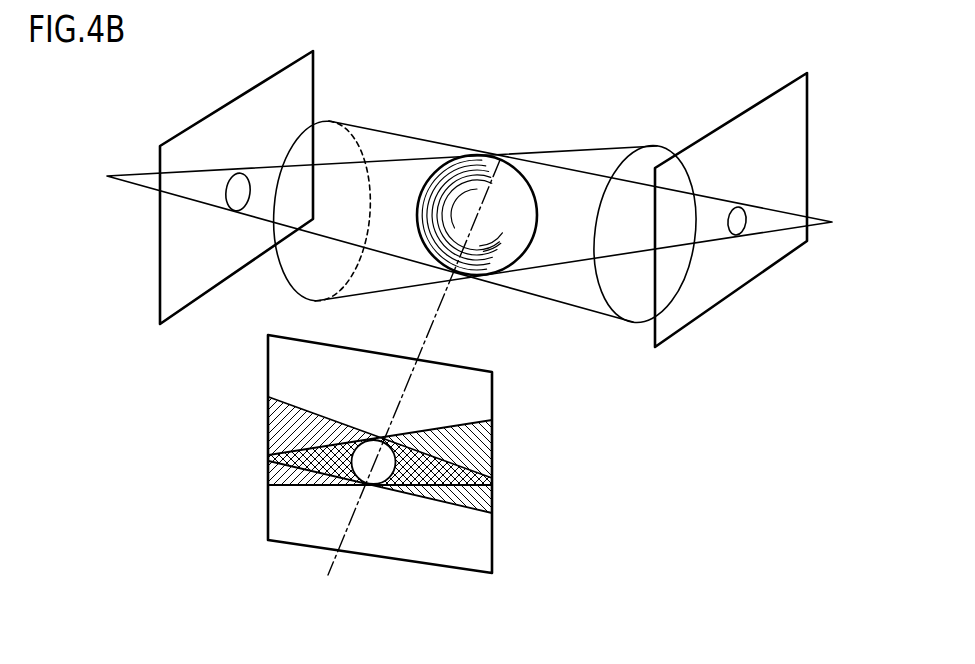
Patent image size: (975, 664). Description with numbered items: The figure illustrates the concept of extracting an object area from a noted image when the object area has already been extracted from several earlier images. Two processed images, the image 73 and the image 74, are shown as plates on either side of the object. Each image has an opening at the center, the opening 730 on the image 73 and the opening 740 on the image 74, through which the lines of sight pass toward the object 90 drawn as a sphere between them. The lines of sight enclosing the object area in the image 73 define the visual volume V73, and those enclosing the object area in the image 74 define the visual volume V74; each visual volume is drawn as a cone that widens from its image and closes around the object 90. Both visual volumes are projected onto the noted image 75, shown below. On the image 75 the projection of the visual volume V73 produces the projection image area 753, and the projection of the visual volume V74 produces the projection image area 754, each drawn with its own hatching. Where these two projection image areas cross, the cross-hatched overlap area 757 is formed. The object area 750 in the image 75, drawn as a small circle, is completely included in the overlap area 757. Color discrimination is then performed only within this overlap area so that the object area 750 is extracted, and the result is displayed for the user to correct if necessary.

The image 74 is at (252, 88).
The hole of first plate 740 is at (228, 188).
The visual volume V73 is at (372, 135).
The sphere 90 is at (500, 180).
The visual volume V74 is at (603, 146).
The image 73 is at (748, 109).
The hole of second plate 730 is at (740, 221).
The image 75 is at (467, 369).
The projection image area 754 is at (288, 427).
The projection image area 753 is at (475, 446).
The overlap area 757 is at (478, 481).
The object area 750 is at (386, 474).